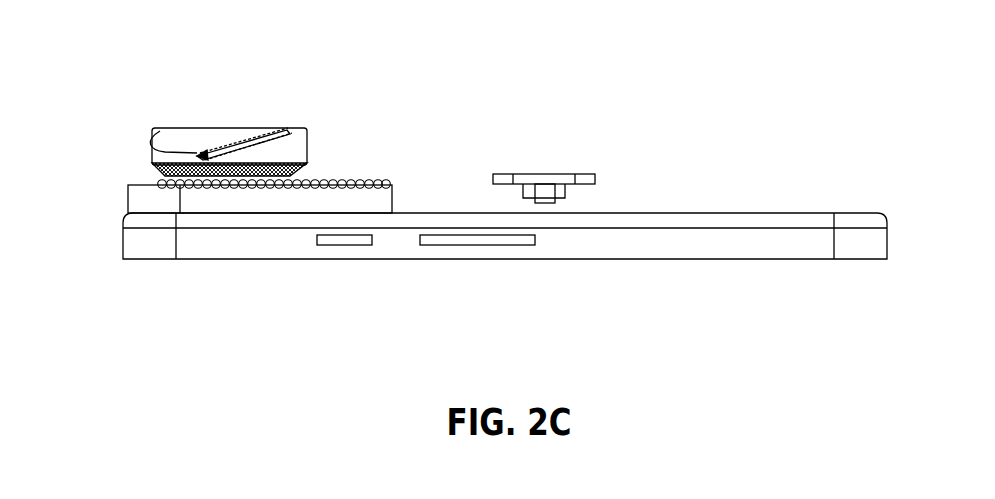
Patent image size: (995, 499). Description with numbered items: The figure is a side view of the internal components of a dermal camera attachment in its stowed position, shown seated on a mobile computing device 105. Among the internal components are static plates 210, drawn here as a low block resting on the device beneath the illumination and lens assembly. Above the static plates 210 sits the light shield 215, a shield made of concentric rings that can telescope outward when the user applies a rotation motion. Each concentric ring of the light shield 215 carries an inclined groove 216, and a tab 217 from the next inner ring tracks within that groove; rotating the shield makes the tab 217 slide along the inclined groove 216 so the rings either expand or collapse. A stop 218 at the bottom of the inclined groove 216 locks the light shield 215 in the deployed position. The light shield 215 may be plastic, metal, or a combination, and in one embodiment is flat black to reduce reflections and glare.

The mobile computing device 105 is at (677, 250).
The static plates 210 is at (258, 211).
The light shield 215 is at (175, 91).
The inclined groove 216 is at (253, 133).
The tab 217 is at (276, 130).
The stop 218 is at (197, 152).